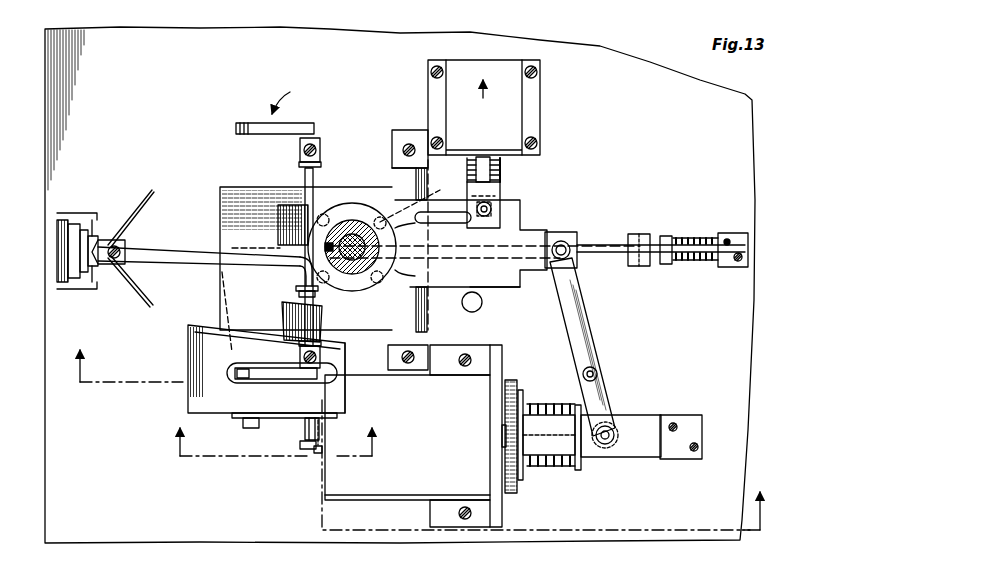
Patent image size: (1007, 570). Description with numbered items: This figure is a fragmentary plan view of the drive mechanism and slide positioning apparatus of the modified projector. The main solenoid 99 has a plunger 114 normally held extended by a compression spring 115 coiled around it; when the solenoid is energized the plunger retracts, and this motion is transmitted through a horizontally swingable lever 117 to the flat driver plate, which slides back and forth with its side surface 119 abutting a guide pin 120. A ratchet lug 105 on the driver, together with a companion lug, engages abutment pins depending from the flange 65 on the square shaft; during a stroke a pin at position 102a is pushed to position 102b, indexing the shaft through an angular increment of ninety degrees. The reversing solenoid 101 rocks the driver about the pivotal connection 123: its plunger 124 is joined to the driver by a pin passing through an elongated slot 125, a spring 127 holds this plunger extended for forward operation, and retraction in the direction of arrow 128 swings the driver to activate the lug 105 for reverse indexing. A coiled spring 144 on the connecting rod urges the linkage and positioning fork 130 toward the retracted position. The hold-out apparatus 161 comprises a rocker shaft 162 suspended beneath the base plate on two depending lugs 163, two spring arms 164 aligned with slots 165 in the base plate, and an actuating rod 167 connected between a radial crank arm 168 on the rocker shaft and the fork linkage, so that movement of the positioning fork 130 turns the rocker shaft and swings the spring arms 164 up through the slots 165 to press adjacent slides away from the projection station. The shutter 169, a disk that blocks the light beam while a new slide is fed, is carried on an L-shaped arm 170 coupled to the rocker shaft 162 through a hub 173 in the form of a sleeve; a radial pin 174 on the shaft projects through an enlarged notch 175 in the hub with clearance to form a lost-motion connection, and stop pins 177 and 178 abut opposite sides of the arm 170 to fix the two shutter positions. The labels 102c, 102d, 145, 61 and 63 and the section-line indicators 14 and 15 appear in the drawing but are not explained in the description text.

The main solenoid 99 is at (448, 431).
The reversing solenoid 101 is at (485, 133).
The abutment pin position 102a is at (332, 208).
The abutment pin position 102b is at (469, 194).
The mounting plate portion 102c is at (255, 238).
The mounting plate arm 102d is at (471, 243).
The ratchet lug 105 is at (278, 214).
The plunger 114 is at (550, 468).
The compression spring 115 is at (538, 403).
The lever 117 is at (605, 378).
The side surface 119 is at (497, 289).
The guide pin 120 is at (473, 312).
The pivotal connection 123 is at (568, 232).
The plunger 124 is at (487, 168).
The elongated slot 125 is at (470, 218).
The spring 127 is at (500, 176).
The arrow 128 is at (501, 94).
The positioning fork 130 is at (143, 202).
The coiled spring 144 is at (725, 233).
The spring 145 is at (680, 240).
The hold-out apparatus 161 is at (298, 96).
The rocker shaft 162 is at (315, 185).
The depending lugs 163 is at (322, 155).
The spring arms 164 is at (290, 128).
The slots 165 is at (258, 384).
The actuating rod 167 is at (186, 270).
The radial crank arm 168 is at (296, 288).
The shutter 169 is at (217, 420).
The L-shaped arm 170 is at (282, 420).
The hub 173 is at (319, 435).
The radial pin 174 is at (304, 449).
The notch 175 is at (312, 455).
The stop pin 177 is at (250, 430).
The stop pin 178 is at (347, 406).
The shaft 61 is at (392, 232).
The shaft 63 is at (392, 276).
The flange 65 is at (350, 292).
The section line 14 is at (273, 442).
The section line 15 is at (420, 440).